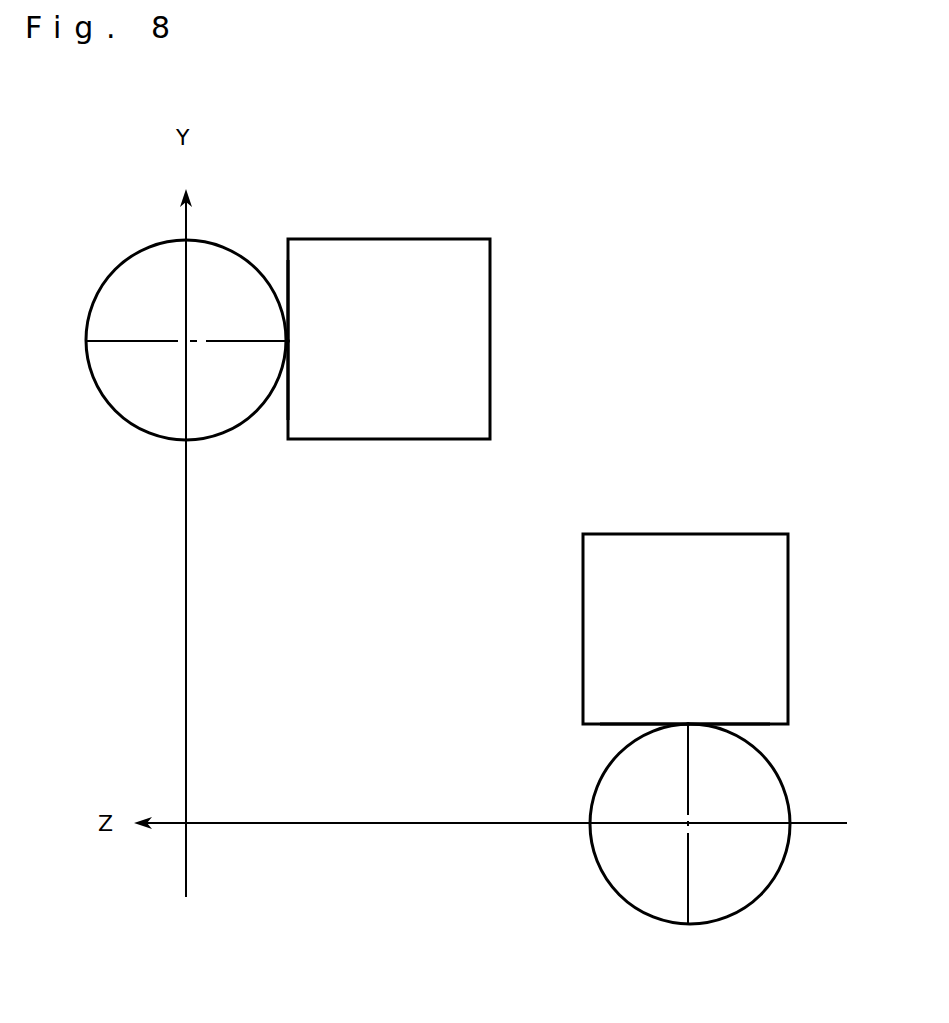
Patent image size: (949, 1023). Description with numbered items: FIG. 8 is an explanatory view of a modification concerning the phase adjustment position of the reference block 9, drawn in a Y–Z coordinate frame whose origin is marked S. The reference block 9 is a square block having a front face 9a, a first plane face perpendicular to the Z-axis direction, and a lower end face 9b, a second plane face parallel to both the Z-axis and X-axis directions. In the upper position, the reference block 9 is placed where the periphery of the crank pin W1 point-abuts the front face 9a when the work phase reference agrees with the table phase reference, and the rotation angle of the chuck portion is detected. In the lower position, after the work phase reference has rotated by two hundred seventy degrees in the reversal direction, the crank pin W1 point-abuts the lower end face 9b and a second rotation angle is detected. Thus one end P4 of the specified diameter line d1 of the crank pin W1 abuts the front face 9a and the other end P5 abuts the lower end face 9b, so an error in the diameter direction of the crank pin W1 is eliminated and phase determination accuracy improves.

The reference block 9 is at (462, 280).
The front face 9a is at (288, 265).
The lower end face 9b is at (612, 724).
The crank pin W1 is at (118, 416).
The specified diameter line d1 is at (225, 342).
The one end of the specified diameter line P4 is at (289, 343).
The other end of the specified diameter line P5 is at (685, 724).
The origin S is at (185, 822).